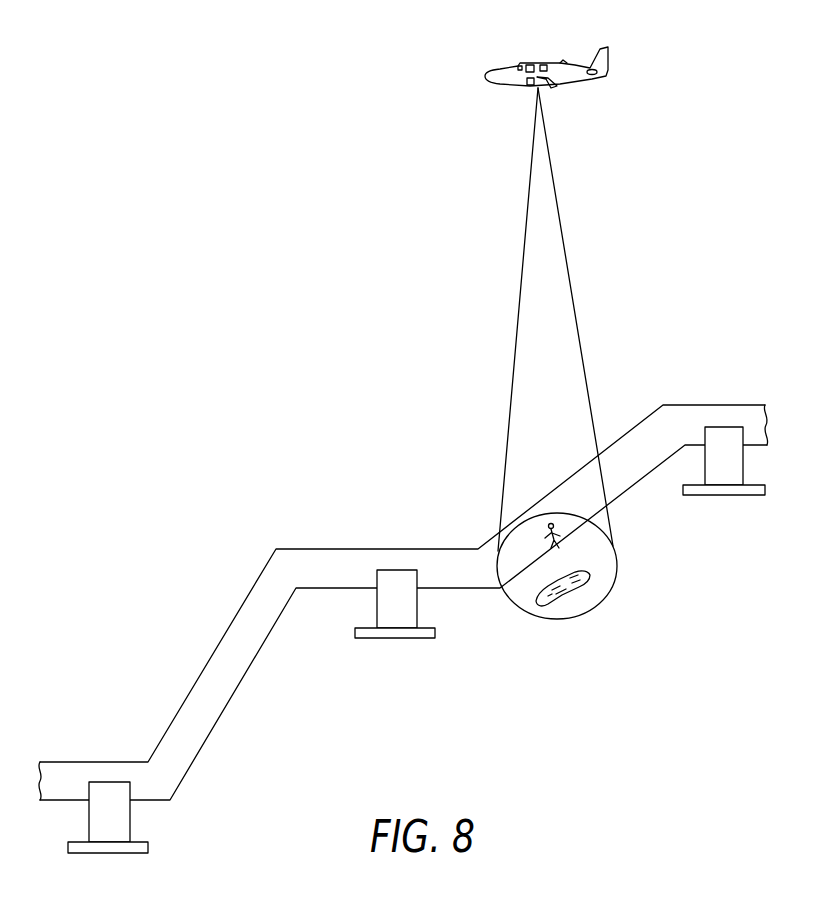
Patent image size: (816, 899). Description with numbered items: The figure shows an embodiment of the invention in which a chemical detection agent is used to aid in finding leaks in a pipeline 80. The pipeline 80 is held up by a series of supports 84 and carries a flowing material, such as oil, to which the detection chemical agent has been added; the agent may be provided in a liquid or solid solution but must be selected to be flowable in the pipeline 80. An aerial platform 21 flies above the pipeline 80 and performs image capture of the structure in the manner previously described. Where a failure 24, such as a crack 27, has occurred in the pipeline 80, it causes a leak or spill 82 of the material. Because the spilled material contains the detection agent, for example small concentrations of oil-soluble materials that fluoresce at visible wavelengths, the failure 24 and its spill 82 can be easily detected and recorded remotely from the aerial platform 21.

The aerial platform 21 is at (555, 62).
The pipeline 80 is at (305, 552).
The supports 84 is at (148, 850).
The failure 24 is at (615, 532).
The crack 27 is at (565, 536).
The spill 82 is at (592, 577).